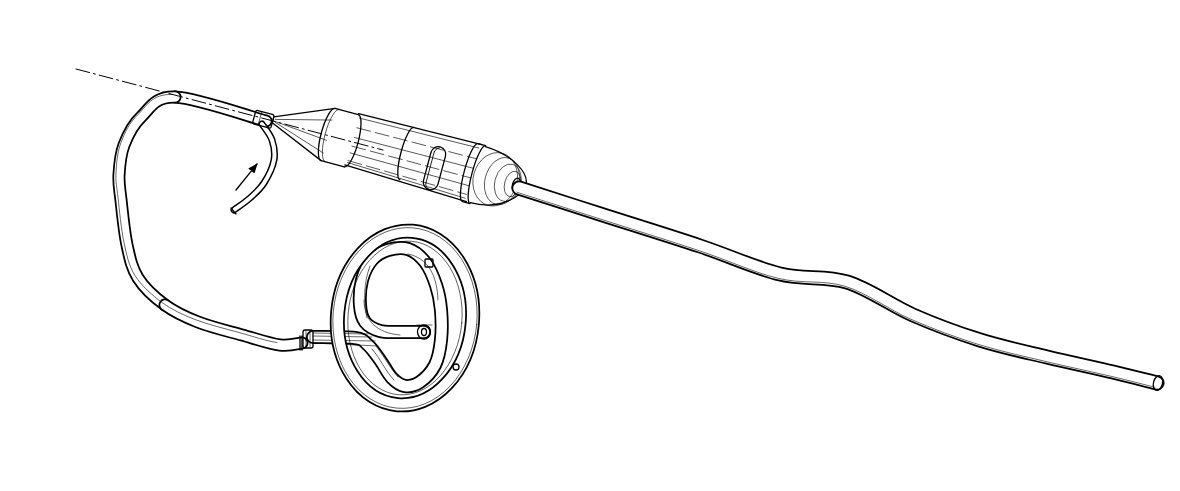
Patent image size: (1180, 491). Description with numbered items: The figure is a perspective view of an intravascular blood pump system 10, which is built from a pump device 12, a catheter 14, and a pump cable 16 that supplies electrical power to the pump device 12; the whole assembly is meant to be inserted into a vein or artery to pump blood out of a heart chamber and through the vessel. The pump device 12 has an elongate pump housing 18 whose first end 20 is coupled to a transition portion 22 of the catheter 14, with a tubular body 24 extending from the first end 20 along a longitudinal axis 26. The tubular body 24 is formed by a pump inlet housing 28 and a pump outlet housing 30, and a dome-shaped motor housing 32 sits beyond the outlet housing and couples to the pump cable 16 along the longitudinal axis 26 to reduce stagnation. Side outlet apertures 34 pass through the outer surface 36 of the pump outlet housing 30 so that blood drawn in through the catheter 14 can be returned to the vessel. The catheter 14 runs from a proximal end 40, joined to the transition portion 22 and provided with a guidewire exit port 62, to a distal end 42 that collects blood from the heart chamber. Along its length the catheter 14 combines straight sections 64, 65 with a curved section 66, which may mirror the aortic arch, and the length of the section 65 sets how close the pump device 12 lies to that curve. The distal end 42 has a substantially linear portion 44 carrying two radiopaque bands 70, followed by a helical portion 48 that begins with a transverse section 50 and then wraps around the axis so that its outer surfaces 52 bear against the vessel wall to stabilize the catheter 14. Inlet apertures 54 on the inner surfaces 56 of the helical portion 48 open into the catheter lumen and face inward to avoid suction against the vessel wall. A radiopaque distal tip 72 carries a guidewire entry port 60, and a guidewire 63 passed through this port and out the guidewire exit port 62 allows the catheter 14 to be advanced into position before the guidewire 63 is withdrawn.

The intravascular blood pump system 10 is at (598, 97).
The pump device 12 is at (401, 145).
The catheter 14 is at (199, 210).
The pump cable 16 is at (747, 260).
The pump housing 18 is at (448, 131).
The first end 20 is at (349, 112).
The transition portion 22 is at (321, 108).
The tubular body 24 is at (384, 140).
The longitudinal axis 26 is at (110, 76).
The pump inlet housing 28 is at (366, 177).
The pump outlet housing 30 is at (473, 148).
The motor housing 32 is at (500, 210).
The side outlet apertures 34 is at (442, 189).
The outer surface 36 is at (464, 160).
The proximal end 40 is at (282, 115).
The distal end 42 is at (413, 341).
The substantially linear portion 44 is at (293, 320).
The helical portion 48 is at (420, 341).
The transverse section 50 is at (372, 360).
The outer surfaces 52 is at (345, 262).
The inlet apertures 54 is at (426, 264).
The inner surfaces 56 is at (452, 317).
The guidewire entry port 60 is at (426, 325).
The guidewire exit port 62 is at (257, 113).
The guidewire 63 is at (256, 190).
The straight section 64 is at (217, 337).
The straight section 65 is at (218, 91).
The curved section 66 is at (140, 287).
The radiopaque bands 70 is at (307, 330).
The distal tip 72 is at (419, 328).